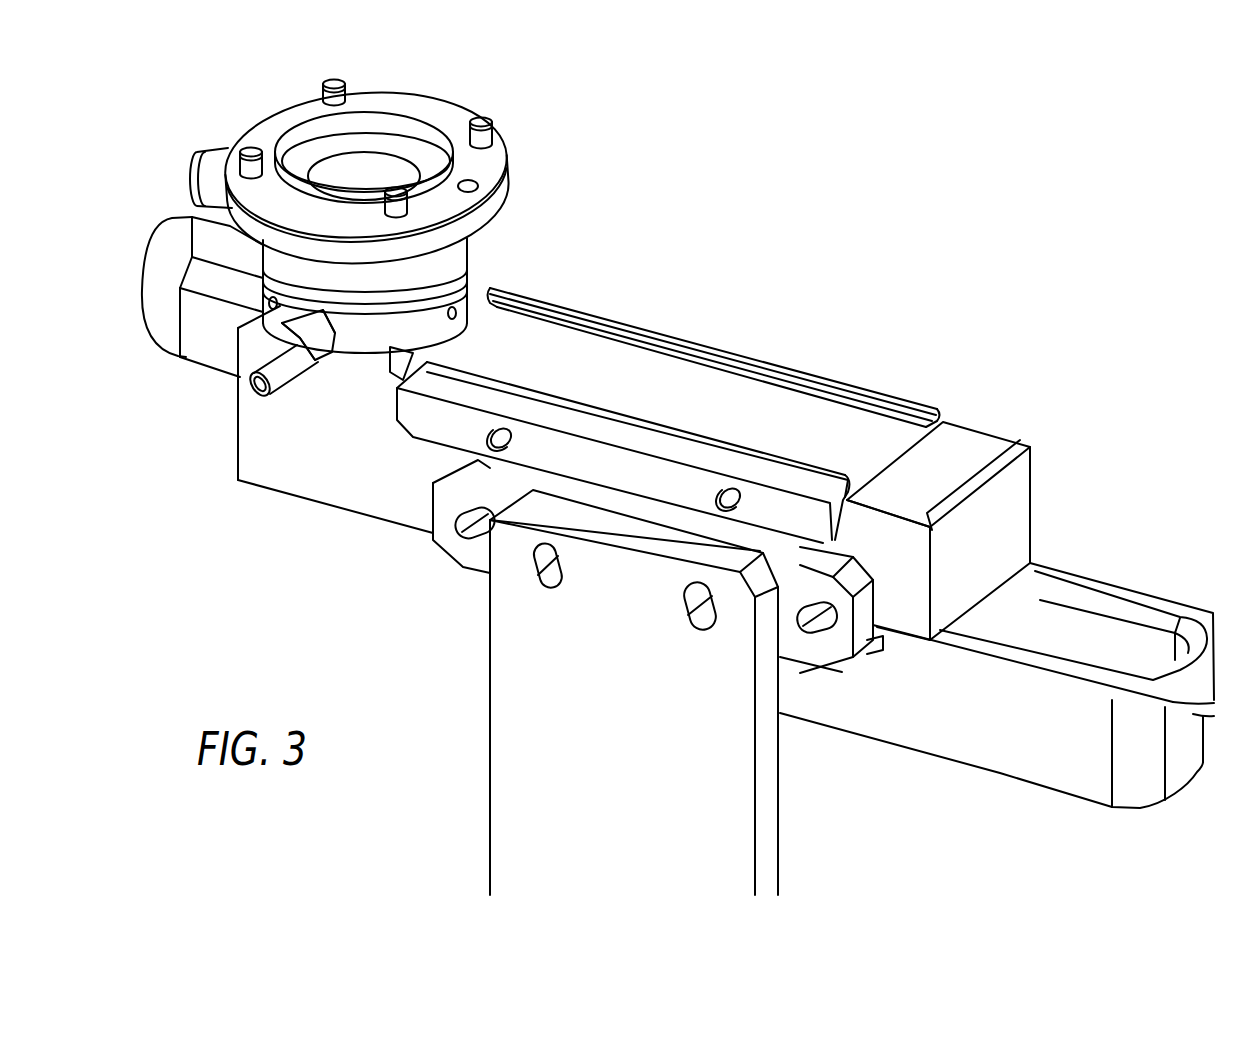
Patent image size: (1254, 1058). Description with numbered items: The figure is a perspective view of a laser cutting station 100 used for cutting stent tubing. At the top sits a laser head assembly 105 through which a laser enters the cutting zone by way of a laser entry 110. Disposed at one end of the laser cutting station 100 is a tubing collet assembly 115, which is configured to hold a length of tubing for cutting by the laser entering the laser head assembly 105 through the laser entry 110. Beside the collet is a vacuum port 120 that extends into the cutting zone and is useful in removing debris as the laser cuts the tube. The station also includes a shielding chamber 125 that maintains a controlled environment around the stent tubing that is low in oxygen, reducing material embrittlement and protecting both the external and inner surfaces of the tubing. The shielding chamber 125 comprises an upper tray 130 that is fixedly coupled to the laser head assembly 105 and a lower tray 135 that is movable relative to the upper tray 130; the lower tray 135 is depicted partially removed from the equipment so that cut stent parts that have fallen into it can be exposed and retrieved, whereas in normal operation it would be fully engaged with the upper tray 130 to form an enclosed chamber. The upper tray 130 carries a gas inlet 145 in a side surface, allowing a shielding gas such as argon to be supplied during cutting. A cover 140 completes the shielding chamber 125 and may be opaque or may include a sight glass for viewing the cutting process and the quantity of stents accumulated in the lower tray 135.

The laser cutting station 100 is at (742, 250).
The laser head assembly 105 is at (500, 198).
The laser entry 110 is at (388, 160).
The tubing collet assembly 115 is at (201, 345).
The vacuum port 120 is at (248, 384).
The shielding chamber 125 is at (613, 357).
The upper tray 130 is at (1010, 500).
The lower tray 135 is at (895, 718).
The cover 140 is at (886, 452).
The gas inlet 145 is at (731, 500).